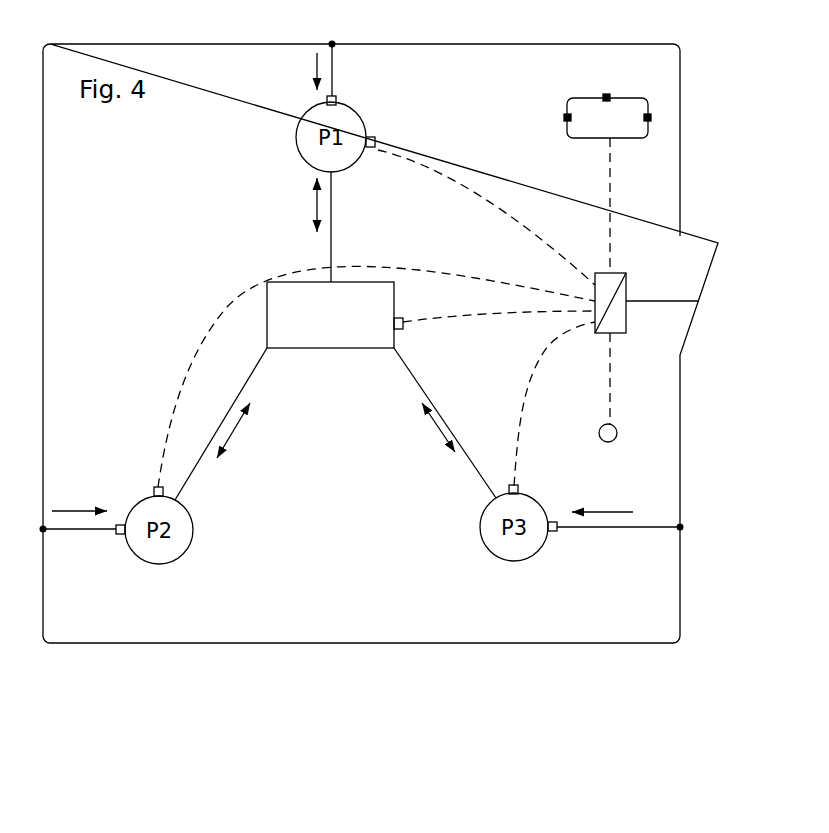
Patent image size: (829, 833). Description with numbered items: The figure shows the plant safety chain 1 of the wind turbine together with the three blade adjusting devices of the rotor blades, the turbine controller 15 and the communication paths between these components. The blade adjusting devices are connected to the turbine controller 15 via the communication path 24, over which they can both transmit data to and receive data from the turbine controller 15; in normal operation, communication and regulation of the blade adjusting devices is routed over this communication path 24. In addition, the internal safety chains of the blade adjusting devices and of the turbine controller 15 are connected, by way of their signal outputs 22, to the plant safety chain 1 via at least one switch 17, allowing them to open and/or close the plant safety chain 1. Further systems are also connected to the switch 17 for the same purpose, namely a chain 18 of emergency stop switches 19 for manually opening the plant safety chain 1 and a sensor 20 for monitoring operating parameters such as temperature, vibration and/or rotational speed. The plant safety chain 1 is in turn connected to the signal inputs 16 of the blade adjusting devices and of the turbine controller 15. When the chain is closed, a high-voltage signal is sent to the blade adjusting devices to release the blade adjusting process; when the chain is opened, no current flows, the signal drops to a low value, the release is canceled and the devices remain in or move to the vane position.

The plant safety chain 1 is at (380, 662).
The turbine controller 15 is at (335, 336).
The signal input 16 is at (325, 100).
The switch 17 is at (620, 325).
The chain of emergency stop switches 18 is at (577, 141).
The emergency stop switch 19 is at (640, 112).
The sensor 20 is at (615, 438).
The signal output 22 is at (375, 137).
The communication path 24 is at (342, 208).